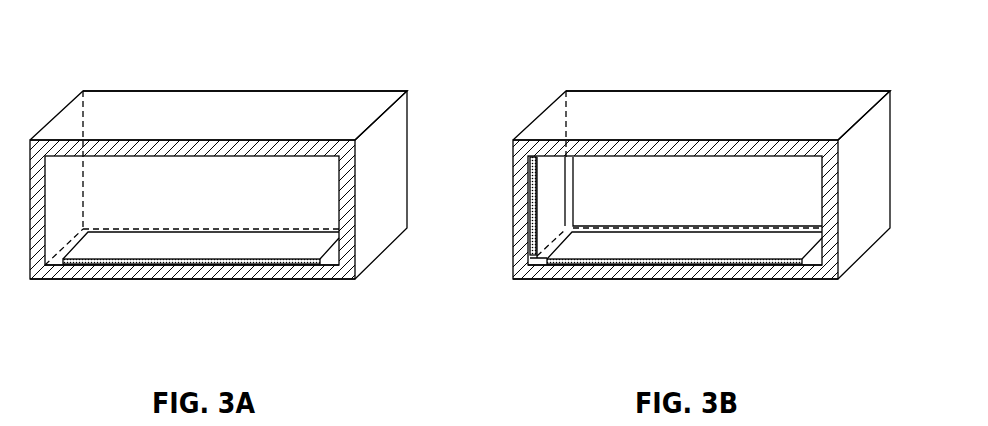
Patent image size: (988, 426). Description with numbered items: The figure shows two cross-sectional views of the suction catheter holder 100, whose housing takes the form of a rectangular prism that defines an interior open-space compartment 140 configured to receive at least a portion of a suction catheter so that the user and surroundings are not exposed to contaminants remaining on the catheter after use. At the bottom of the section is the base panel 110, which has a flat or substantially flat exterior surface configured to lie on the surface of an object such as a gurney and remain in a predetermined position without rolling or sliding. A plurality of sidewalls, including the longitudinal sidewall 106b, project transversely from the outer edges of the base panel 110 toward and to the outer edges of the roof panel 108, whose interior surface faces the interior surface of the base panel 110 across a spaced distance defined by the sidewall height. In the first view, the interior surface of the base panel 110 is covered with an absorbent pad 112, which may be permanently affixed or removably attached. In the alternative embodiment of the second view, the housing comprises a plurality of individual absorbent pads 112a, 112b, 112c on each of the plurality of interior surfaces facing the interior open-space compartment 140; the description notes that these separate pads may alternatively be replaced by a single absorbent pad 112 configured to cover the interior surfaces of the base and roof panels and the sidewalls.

In FIG. 3A, the suction catheter holder 100 is at (118, 47).
In FIG. 3B, the suction catheter holder 100 is at (568, 47).
In FIG. 3A, the roof panel 108 is at (326, 100).
In FIG. 3B, the roof panel 108 is at (808, 102).
In FIG. 3A, the longitudinal sidewall 106b is at (367, 240).
In FIG. 3B, the longitudinal sidewall 106b is at (850, 238).
In FIG. 3A, the interior open-space compartment 140 is at (302, 191).
In FIG. 3B, the interior open-space compartment 140 is at (785, 191).
In FIG. 3A, the base panel 110 is at (58, 280).
In FIG. 3B, the base panel 110 is at (538, 280).
In FIG. 3A, the absorbent pad 112 is at (252, 242).
In FIG. 3B, the absorbent pad 112a is at (733, 240).
In FIG. 3B, the absorbent pad 112b is at (548, 213).
In FIG. 3B, the absorbent pad 112c is at (747, 173).